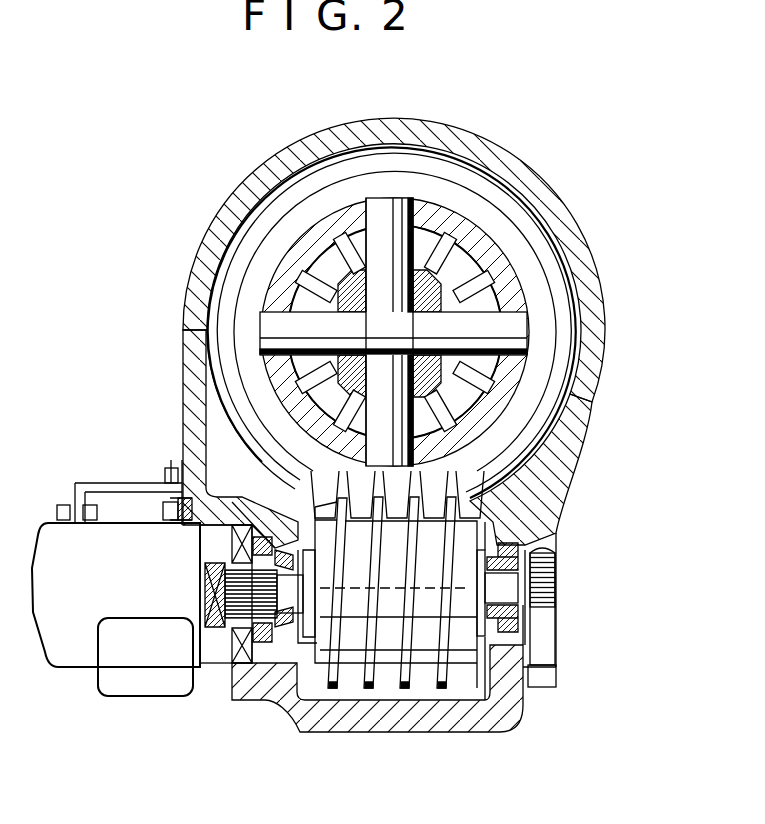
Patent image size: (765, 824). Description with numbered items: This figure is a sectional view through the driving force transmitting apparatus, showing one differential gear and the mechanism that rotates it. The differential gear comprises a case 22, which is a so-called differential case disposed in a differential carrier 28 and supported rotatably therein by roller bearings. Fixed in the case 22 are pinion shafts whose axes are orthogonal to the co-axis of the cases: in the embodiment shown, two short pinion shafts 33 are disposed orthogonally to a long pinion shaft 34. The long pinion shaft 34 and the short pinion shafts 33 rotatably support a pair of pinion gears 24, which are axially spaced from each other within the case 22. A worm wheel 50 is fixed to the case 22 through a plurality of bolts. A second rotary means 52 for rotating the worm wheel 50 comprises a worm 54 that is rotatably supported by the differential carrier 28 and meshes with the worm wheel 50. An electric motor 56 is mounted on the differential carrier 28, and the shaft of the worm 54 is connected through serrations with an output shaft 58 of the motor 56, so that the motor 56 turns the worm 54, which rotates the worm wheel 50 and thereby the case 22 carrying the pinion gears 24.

The case 22 is at (293, 263).
The pinion gears 24 is at (483, 283).
The differential carrier 28 is at (315, 715).
The short pinion shafts 33 is at (370, 375).
The long pinion shaft 34 is at (463, 217).
The worm wheel 50 is at (563, 347).
The second rotary means 52 is at (428, 688).
The worm 54 is at (447, 677).
The electric motor 56 is at (67, 640).
The output shaft 58 is at (223, 627).